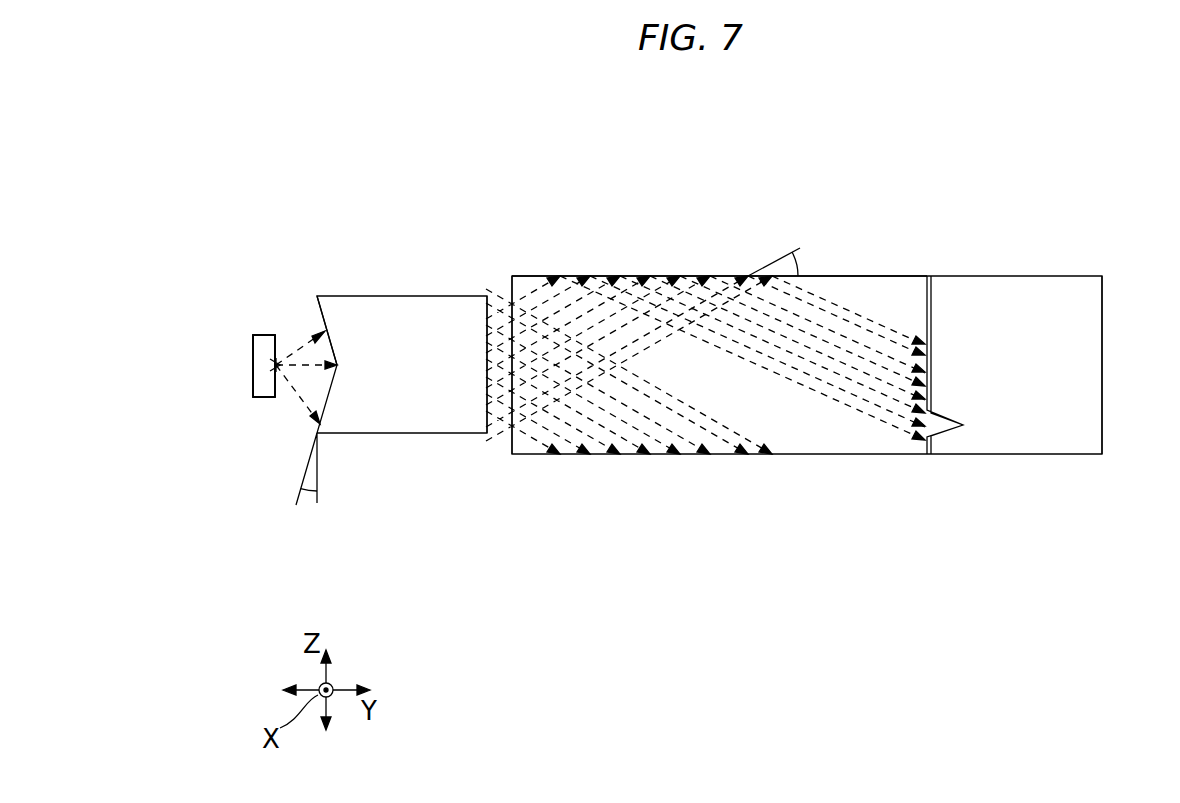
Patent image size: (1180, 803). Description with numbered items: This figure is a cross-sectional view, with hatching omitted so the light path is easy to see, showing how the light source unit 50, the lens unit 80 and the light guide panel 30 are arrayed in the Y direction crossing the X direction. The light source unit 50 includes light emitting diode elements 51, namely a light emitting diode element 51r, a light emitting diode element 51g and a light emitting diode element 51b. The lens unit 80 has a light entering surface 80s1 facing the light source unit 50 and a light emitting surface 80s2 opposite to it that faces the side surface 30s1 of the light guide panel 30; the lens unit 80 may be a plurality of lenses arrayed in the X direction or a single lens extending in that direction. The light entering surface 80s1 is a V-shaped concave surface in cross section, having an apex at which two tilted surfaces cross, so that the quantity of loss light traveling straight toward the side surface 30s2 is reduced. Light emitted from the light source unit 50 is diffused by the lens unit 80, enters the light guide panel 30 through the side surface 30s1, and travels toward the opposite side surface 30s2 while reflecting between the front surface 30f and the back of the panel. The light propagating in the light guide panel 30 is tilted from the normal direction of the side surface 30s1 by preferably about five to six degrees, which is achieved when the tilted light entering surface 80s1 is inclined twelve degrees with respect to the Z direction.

The lens unit 80 is at (381, 323).
The light entering surface 80s1 is at (298, 329).
The light emitting surface 80s2 is at (500, 302).
The light guide panel 30 is at (1066, 318).
The front surface 30f is at (611, 276).
The side surface 30s1 is at (508, 446).
The side surface 30s2 is at (1102, 431).
The light emitting diode element 51 is at (253, 365).
The light emitting diode element 51r is at (264, 366).
The light emitting diode element 51g is at (264, 366).
The light emitting diode element 51b is at (264, 366).
The light source unit 50 is at (264, 366).